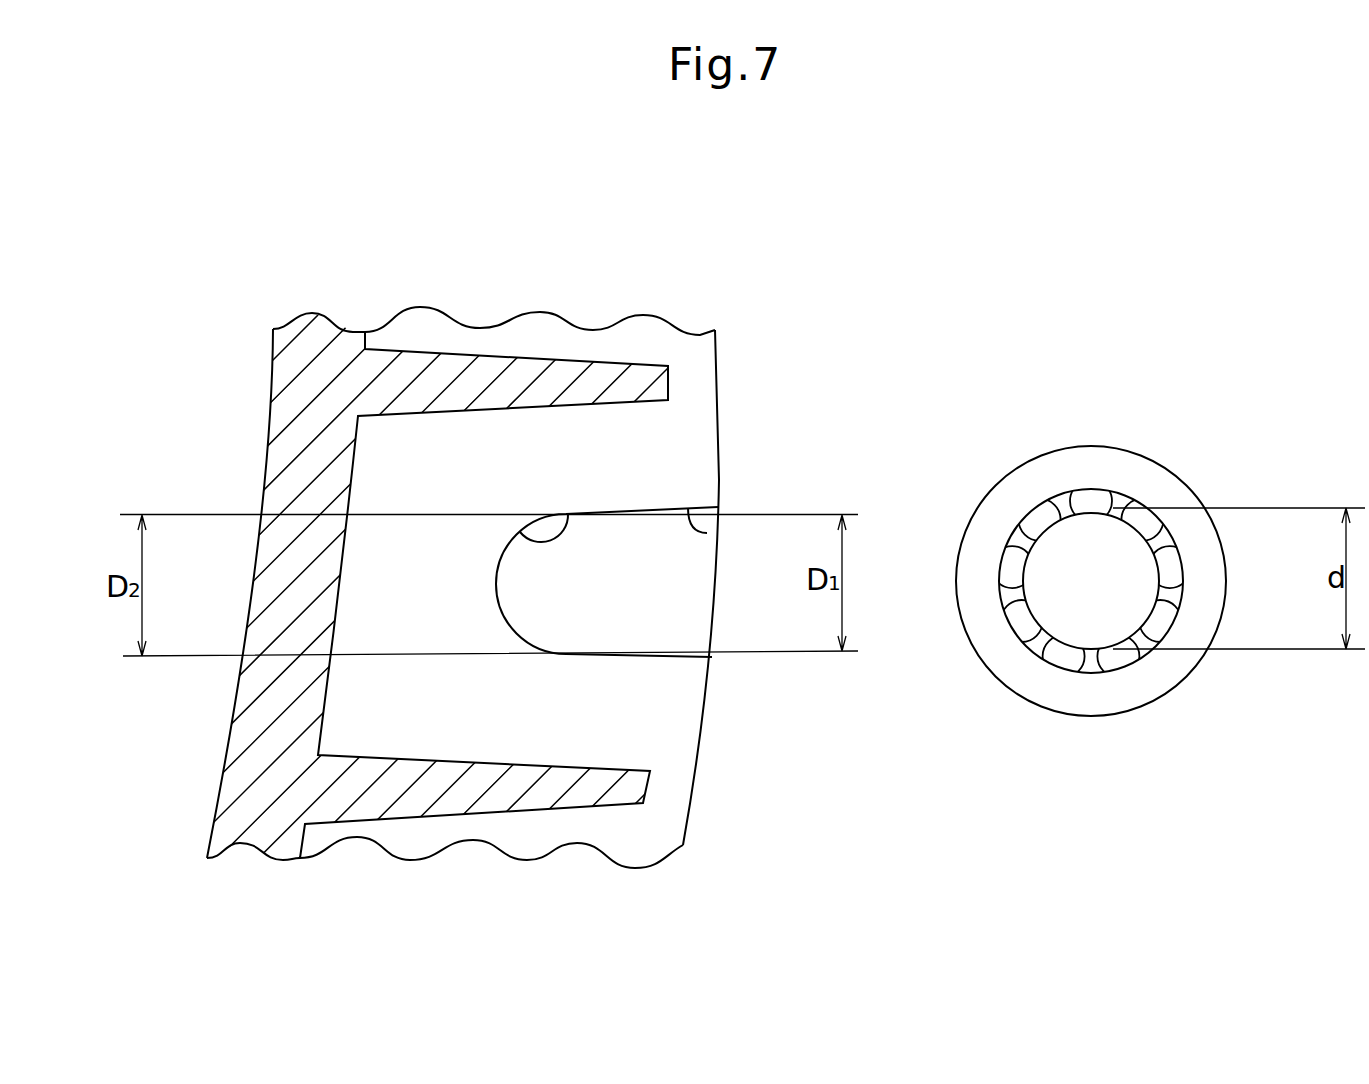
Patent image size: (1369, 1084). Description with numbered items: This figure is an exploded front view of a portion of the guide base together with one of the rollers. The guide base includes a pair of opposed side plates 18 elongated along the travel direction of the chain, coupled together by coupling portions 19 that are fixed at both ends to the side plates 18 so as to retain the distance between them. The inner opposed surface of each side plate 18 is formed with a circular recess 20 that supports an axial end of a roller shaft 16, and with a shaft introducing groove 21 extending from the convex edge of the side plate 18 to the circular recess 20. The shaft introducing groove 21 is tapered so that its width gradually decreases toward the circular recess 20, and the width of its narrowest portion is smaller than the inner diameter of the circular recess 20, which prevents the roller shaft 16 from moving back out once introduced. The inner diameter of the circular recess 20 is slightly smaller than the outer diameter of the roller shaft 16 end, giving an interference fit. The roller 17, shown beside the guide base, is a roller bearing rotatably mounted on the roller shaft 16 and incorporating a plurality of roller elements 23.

The roller shaft 16 is at (1077, 527).
The roller 17 is at (1122, 462).
The side plate 18 is at (683, 705).
The coupling portion 19 is at (635, 788).
The circular recess 20 is at (569, 514).
The shaft introducing groove 21 is at (707, 533).
The roller element 23 is at (1062, 658).